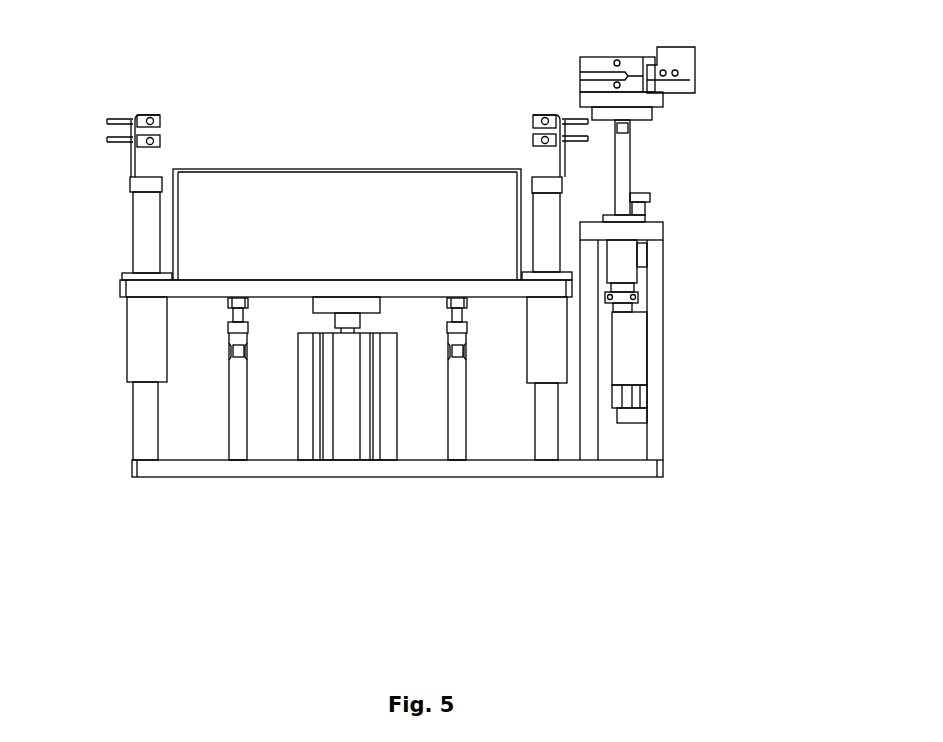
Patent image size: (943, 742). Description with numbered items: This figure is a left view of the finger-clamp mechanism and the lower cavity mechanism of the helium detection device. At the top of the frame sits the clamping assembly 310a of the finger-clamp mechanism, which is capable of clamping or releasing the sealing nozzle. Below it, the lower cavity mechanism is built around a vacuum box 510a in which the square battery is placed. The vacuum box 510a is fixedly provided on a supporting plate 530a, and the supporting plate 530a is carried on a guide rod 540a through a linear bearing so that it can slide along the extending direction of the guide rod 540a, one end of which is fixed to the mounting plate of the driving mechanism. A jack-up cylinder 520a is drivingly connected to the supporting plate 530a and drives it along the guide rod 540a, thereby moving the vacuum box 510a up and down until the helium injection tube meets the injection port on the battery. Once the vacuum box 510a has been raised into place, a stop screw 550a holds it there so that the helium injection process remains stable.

The clamping assembly 310a is at (705, 88).
The vacuum box 510a is at (363, 175).
The jack-up cylinder 520a is at (308, 442).
The supporting plate 530a is at (198, 287).
The guide rod 540a is at (148, 417).
The stop screw 550a is at (462, 428).